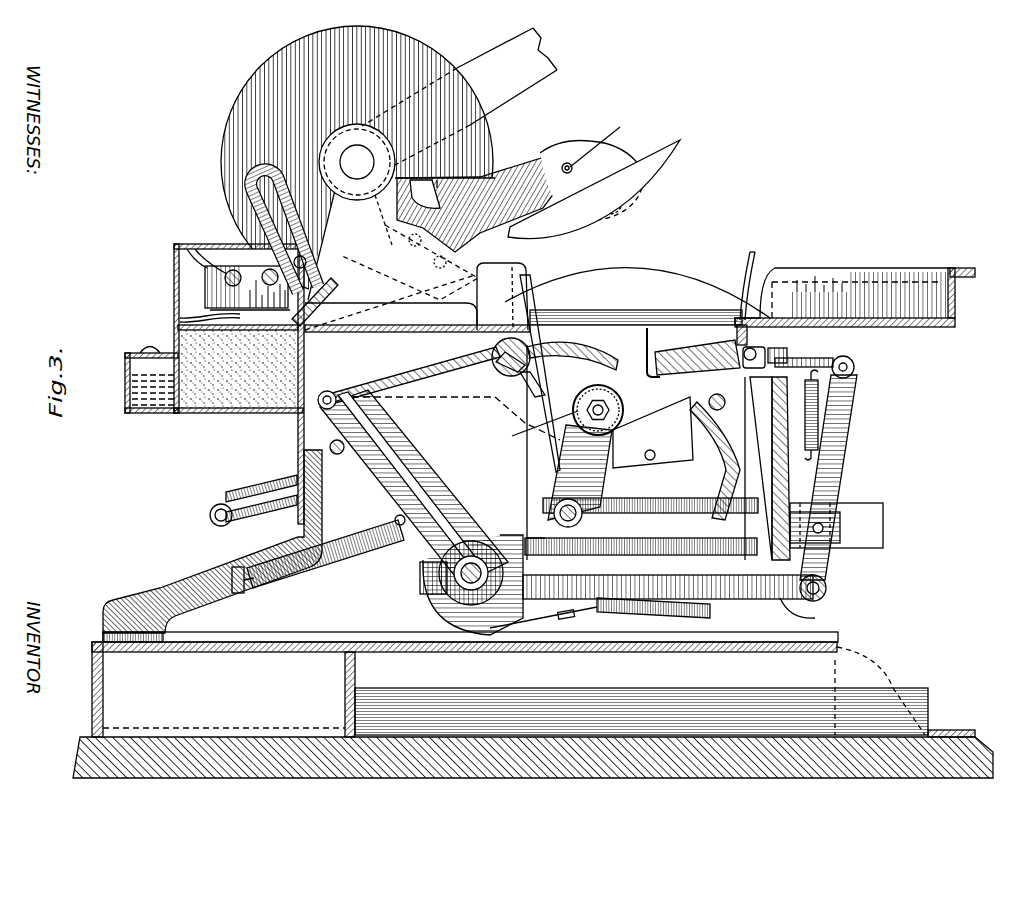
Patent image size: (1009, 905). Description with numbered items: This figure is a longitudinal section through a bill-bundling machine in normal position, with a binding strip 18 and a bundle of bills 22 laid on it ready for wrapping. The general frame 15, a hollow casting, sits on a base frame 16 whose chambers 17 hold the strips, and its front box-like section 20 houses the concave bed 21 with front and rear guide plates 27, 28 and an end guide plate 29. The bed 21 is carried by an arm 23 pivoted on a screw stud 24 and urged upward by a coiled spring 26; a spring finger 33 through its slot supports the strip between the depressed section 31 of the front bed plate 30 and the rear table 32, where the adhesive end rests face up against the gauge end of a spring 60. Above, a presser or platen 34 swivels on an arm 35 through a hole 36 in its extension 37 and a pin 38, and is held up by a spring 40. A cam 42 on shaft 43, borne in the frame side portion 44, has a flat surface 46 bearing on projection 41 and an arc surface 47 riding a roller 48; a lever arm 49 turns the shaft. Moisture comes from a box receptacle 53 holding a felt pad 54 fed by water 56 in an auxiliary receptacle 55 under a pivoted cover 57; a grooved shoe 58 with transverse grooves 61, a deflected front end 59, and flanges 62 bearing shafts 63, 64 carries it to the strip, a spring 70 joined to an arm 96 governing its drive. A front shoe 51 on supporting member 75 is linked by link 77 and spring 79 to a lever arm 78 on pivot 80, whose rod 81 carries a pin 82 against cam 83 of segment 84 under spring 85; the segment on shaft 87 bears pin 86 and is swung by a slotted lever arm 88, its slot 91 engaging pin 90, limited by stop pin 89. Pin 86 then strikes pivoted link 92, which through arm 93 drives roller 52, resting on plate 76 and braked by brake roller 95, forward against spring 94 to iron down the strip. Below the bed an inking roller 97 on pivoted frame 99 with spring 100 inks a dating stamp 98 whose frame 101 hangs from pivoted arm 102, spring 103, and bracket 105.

The general frame 15 is at (470, 546).
The base frame 16 is at (850, 648).
The chambers 17 is at (641, 694).
The binding strip 18 is at (430, 326).
The box-like section 20 is at (527, 464).
The bed 21 is at (580, 360).
The bundle of bills 22 is at (626, 310).
The arm 23 is at (445, 418).
The screw stud 24 is at (287, 414).
The coiled spring 26 is at (668, 574).
The front guide plate 27 is at (749, 256).
The rear guide plate 28 is at (526, 266).
The end guide plate 29 is at (650, 268).
The bed plate 30 is at (955, 267).
The depressed section 31 is at (946, 292).
The table 32 is at (518, 367).
The spring finger 33 is at (648, 350).
The presser or platen 34 is at (666, 168).
The arm 35 is at (578, 140).
The hole 36 is at (563, 164).
The extension 37 is at (604, 184).
The pin 38 is at (606, 139).
The coiled spring 40 is at (527, 494).
The projection or cam surface 41 is at (483, 176).
The cam 42 is at (440, 58).
The shaft 43 is at (357, 162).
The side portion 44 is at (365, 220).
The flat surface 46 is at (442, 189).
The uniform surface 47 is at (390, 34).
The roller 48 is at (409, 262).
The lever arm 49 is at (550, 36).
The shoe 51 is at (788, 352).
The roller 52 is at (507, 376).
The box receptacle 53 is at (173, 295).
The felt pad 54 is at (240, 408).
The auxiliary receptacle 55 is at (124, 400).
The water 56 is at (158, 413).
The pivoted cover 57 is at (134, 348).
The moistening shoe 58 is at (240, 302).
The deflected front end 59 is at (338, 292).
The spring 60 is at (396, 334).
The transverse grooves 61 is at (180, 319).
The flanges 62 is at (188, 250).
The transverse shaft 63 is at (208, 250).
The transverse shaft 64 is at (265, 273).
The coiled spring 70 is at (262, 495).
The supporting member 75 is at (767, 468).
The supporting plate 76 is at (522, 378).
The link 77 is at (848, 360).
The lever arm 78 is at (838, 492).
The spring 79 is at (820, 421).
The pivot 80 is at (824, 529).
The rod or link 81 is at (764, 600).
The roller or pin 82 is at (527, 575).
The cam 83 is at (470, 540).
The segment 84 is at (440, 606).
The spring 85 is at (626, 618).
The pin 86 is at (420, 586).
The transverse shaft 87 is at (468, 586).
The lever arm 88 is at (390, 470).
The stop pin 89 is at (338, 456).
The pin or screw 90 is at (307, 263).
The slot 91 is at (245, 190).
The pivoted link 92 is at (397, 503).
The arm 93 is at (430, 366).
The spring 94 is at (306, 570).
The brake roller 95 is at (495, 362).
The arm 96 is at (262, 515).
The inking roller 97 is at (536, 430).
The dating stamp 98 is at (626, 418).
The pivoted frame 99 is at (588, 470).
The spring 100 is at (583, 517).
The stamp frame 101 is at (653, 432).
The pivoted arm 102 is at (690, 513).
The spring 103 is at (722, 470).
The bracket 105 is at (716, 395).